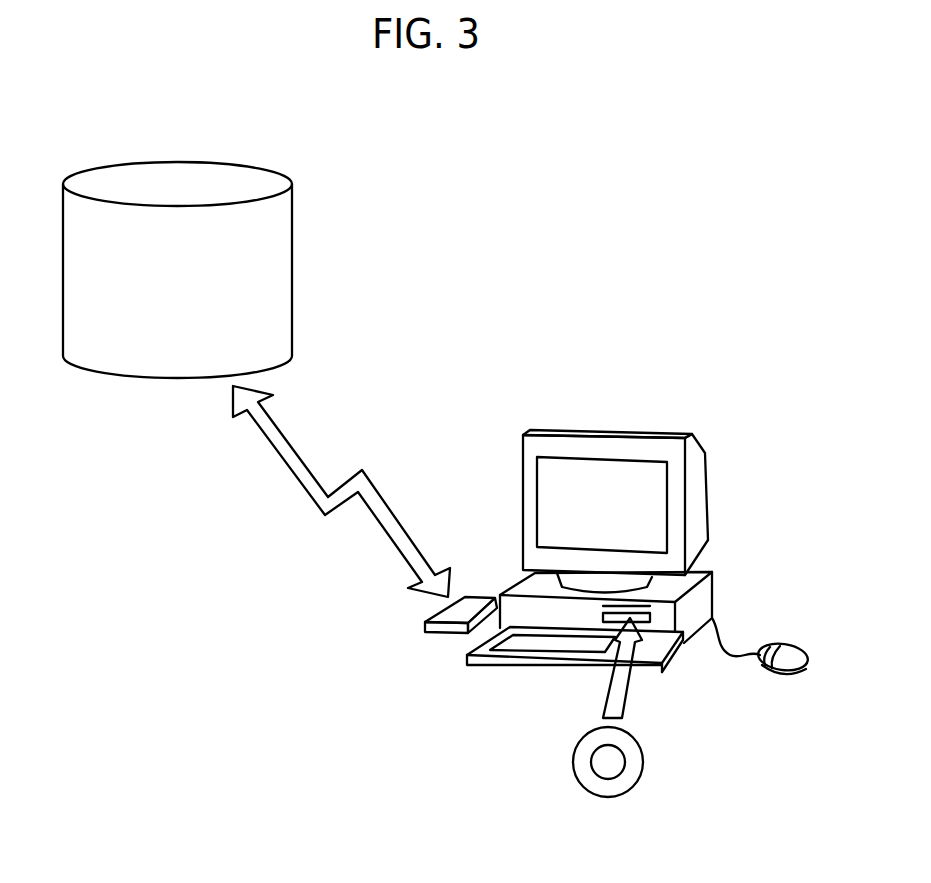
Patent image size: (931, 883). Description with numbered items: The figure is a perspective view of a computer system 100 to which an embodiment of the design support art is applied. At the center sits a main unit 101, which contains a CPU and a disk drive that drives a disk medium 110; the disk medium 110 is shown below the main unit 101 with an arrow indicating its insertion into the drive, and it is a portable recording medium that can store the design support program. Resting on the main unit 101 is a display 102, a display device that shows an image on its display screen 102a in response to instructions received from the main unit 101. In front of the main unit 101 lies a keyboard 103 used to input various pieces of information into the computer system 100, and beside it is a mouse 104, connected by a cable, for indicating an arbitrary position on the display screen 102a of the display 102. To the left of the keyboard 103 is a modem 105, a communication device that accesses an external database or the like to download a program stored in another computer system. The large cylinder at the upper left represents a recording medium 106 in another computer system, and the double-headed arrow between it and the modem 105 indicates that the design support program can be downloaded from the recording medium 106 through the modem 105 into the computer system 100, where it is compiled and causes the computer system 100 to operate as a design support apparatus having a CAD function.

The computer system 100 is at (630, 392).
The main unit 101 is at (713, 583).
The display 102 is at (616, 486).
The display screen 102a is at (555, 467).
The keyboard 103 is at (488, 668).
The mouse 104 is at (782, 675).
The modem 105 is at (423, 623).
The recording medium 106 is at (130, 178).
The disk medium 110 is at (643, 755).